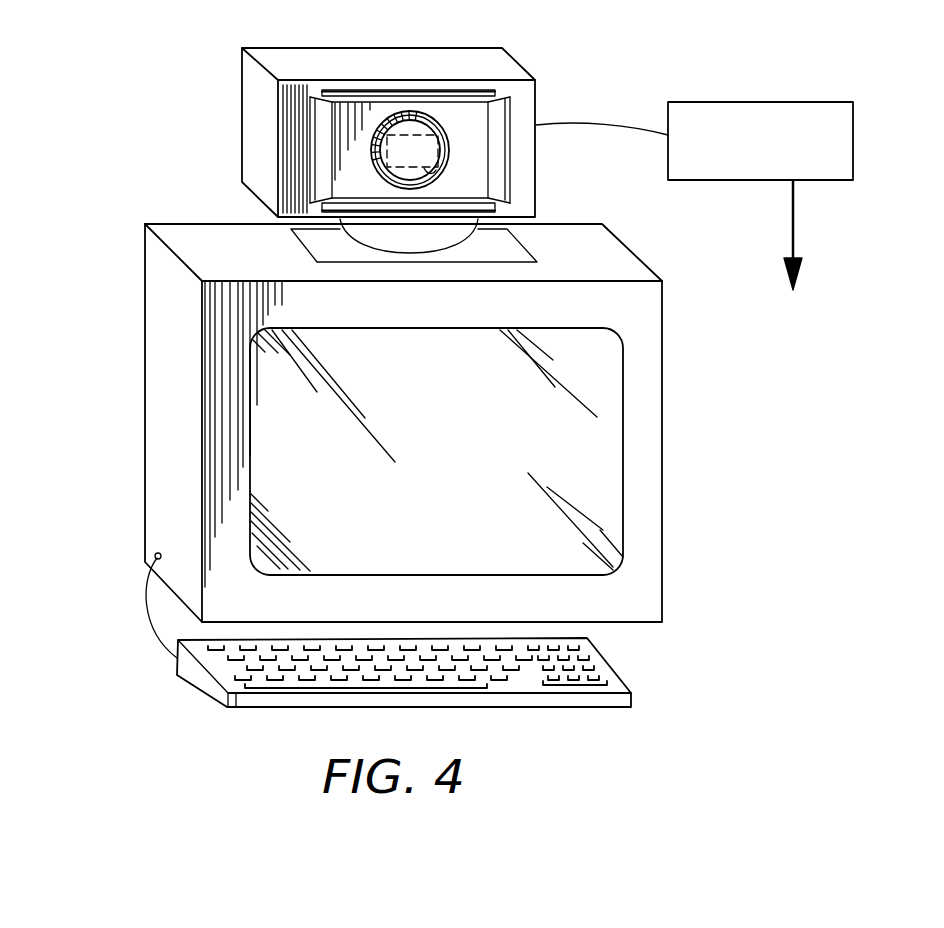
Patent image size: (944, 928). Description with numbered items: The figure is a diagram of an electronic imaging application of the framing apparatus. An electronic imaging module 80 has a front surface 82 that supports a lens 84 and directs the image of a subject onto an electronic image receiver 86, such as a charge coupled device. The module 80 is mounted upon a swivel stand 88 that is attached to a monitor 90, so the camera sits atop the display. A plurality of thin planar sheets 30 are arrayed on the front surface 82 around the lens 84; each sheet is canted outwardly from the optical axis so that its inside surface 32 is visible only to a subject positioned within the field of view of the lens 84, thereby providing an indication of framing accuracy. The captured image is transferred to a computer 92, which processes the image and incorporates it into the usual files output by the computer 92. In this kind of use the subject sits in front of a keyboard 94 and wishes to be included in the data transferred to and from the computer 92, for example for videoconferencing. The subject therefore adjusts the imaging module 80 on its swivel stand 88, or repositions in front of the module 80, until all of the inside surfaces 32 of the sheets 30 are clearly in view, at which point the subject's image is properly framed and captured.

The thin element 30 is at (441, 90).
The inside surface 32 is at (500, 113).
The electronic imaging module 80 is at (240, 77).
The front surface 82 is at (293, 128).
The lens 84 is at (449, 147).
The electronic image receiver 86 is at (447, 172).
The swivel stand 88 is at (453, 232).
The monitor 90 is at (157, 333).
The computer 92 is at (714, 182).
The keyboard 94 is at (613, 675).